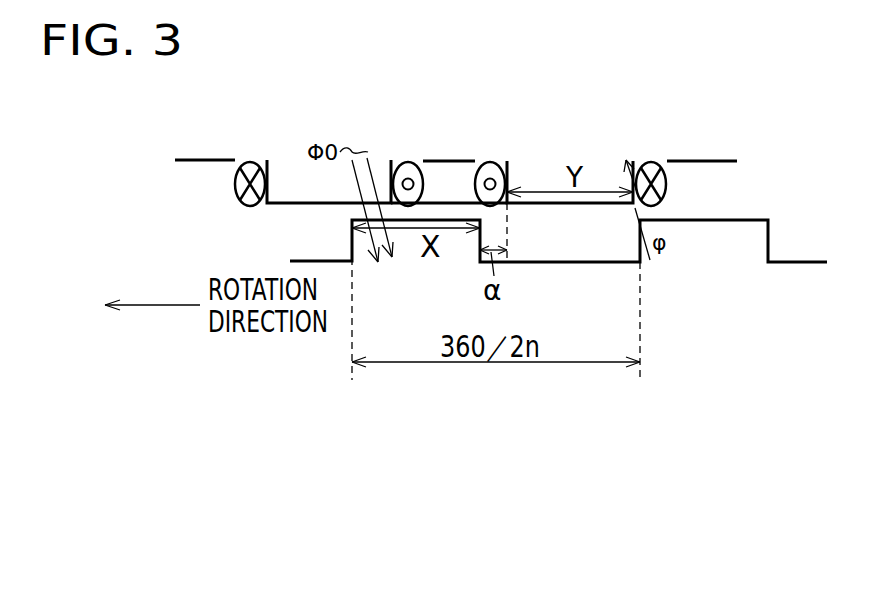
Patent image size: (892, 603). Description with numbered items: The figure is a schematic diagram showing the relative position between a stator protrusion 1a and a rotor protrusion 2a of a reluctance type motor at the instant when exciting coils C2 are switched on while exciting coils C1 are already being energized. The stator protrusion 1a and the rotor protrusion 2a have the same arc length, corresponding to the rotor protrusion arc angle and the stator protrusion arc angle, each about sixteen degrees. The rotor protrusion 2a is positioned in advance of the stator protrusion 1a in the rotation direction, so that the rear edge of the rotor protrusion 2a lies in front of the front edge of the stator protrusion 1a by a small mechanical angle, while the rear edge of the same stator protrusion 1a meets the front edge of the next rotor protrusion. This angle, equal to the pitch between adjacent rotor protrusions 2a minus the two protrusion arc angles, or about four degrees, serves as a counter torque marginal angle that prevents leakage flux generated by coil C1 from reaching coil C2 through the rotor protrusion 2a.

The stator protrusion 1a is at (572, 209).
The rotor protrusion 2a is at (438, 218).
The exciting coil C1 is at (407, 160).
The exciting coil C2 is at (653, 163).